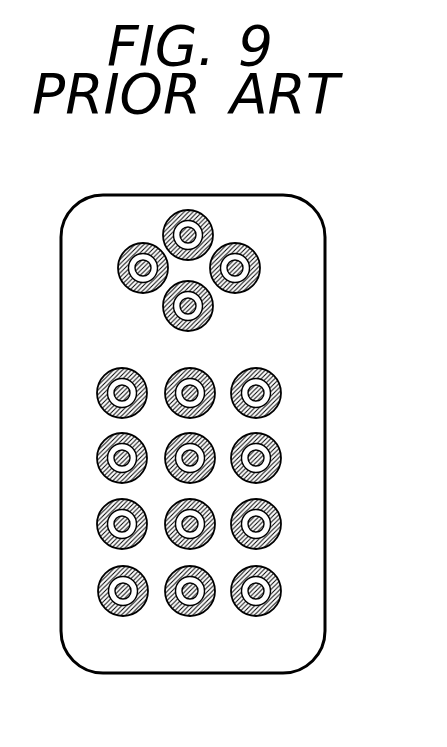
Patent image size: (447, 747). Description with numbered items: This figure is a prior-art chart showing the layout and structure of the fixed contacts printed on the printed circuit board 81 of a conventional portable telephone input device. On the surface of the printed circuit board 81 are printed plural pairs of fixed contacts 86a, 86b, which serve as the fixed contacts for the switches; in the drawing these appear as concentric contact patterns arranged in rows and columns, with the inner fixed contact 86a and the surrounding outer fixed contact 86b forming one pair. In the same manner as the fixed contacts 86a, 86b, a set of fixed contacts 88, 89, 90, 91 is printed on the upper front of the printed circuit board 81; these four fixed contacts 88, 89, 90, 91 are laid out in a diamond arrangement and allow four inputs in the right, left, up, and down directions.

The printed circuit board 81 is at (326, 507).
The fixed contact 86a is at (263, 582).
The fixed contact 86b is at (255, 616).
The fixed contact 88 is at (253, 251).
The fixed contact 89 is at (130, 288).
The fixed contact 90 is at (189, 210).
The fixed contact 91 is at (206, 322).